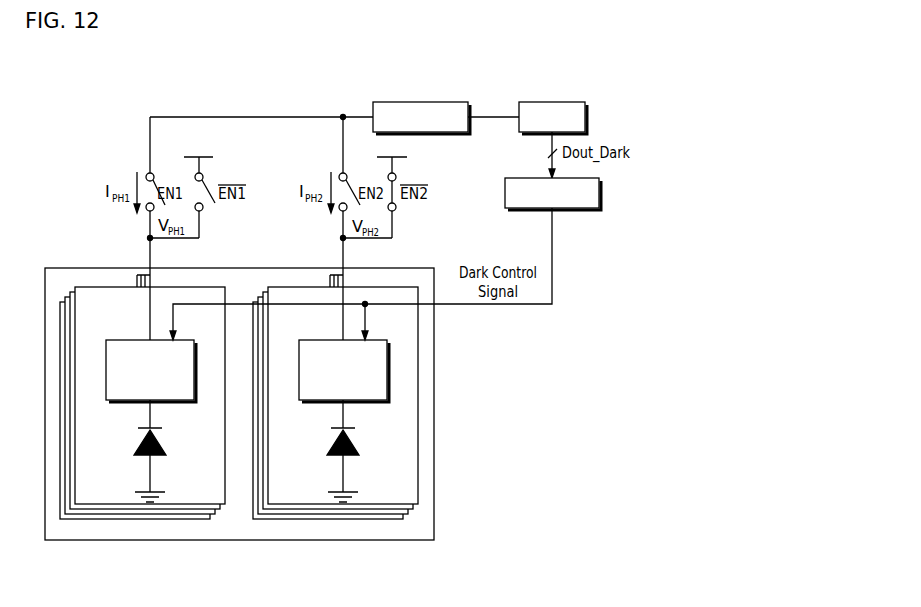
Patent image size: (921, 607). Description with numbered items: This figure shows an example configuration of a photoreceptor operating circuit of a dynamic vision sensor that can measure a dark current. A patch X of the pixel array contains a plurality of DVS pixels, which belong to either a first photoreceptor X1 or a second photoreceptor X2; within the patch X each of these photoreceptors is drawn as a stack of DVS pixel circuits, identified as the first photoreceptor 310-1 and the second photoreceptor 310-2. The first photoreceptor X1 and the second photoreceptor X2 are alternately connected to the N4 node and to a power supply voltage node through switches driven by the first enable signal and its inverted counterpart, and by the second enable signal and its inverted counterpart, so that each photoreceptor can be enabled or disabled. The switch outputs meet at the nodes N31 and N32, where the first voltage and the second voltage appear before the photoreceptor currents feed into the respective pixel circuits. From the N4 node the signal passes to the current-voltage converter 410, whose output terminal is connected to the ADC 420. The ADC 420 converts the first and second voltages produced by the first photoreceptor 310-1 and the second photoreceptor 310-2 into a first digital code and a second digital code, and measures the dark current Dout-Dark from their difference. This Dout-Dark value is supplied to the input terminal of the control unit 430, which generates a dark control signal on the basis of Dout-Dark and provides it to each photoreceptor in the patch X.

The current-voltage converter 410 is at (434, 103).
The analog digital converter 420 is at (554, 103).
The control unit 430 is at (568, 210).
The first photoreceptor 310-1 is at (132, 340).
The second photoreceptor 310-2 is at (325, 340).
The N4 node N4 is at (342, 116).
The node N31 is at (148, 238).
The node N32 is at (341, 238).
The patch X is at (87, 548).
The first photoreceptor X1 is at (225, 497).
The second photoreceptor X2 is at (418, 497).